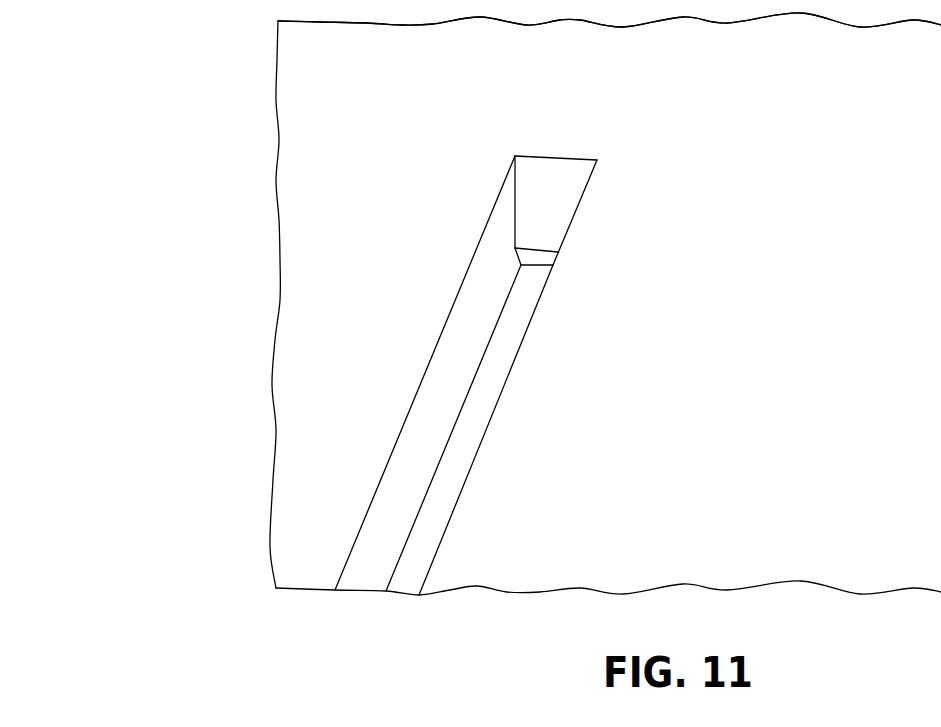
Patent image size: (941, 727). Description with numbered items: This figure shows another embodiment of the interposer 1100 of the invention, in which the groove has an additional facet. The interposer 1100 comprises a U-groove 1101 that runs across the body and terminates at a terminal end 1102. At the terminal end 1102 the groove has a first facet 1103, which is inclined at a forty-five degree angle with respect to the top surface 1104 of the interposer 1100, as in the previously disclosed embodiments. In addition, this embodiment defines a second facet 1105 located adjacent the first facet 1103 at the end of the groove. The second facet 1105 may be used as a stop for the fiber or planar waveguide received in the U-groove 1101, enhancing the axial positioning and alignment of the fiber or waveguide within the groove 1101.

The interposer 1100 is at (255, 246).
The U-groove 1101 is at (422, 447).
The terminal end 1102 is at (530, 155).
The first facet 1103 is at (562, 183).
The top surface 1104 is at (325, 88).
The second facet 1105 is at (547, 260).